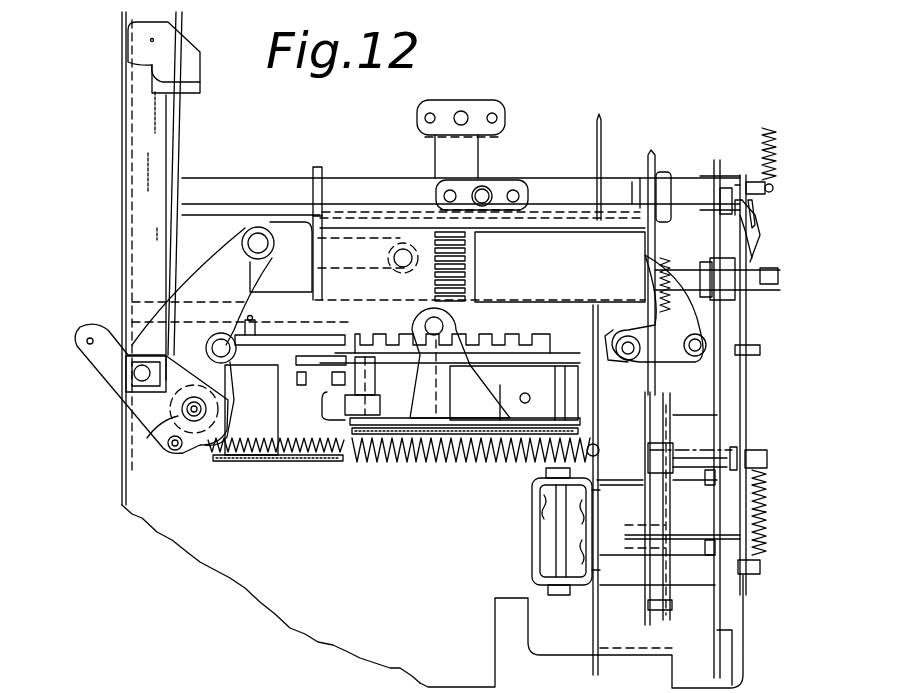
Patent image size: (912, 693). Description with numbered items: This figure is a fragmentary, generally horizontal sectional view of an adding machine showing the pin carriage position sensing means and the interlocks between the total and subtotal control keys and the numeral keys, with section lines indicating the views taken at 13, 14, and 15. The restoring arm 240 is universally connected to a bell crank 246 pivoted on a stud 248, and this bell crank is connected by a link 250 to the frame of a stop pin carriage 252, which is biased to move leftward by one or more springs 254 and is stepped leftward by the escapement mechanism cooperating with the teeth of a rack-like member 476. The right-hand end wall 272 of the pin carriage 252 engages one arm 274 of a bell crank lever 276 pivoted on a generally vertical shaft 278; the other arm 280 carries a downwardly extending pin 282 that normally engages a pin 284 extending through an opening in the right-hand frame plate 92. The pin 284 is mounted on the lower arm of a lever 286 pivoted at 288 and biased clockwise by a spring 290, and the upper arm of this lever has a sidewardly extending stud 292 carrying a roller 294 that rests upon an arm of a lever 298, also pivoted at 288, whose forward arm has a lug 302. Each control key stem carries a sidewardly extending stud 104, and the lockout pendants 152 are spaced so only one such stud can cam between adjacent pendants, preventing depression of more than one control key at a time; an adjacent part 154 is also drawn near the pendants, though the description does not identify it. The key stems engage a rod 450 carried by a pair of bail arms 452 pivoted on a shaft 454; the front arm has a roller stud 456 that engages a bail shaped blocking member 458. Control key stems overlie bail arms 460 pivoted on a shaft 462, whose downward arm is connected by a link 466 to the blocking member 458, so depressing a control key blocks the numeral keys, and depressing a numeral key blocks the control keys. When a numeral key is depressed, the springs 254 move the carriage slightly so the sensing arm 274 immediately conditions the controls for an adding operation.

The right-hand frame plate 92 is at (720, 390).
The sidewardly extending stud 104 is at (757, 535).
The lockout pendant 152 is at (672, 600).
The plate 154 is at (653, 423).
The restoring arm 240 is at (180, 134).
The bell crank 246 is at (215, 262).
The stud 248 is at (178, 428).
The link 250 is at (277, 257).
The stop pin carriage 252 is at (385, 293).
The spring 254 is at (205, 460).
The right-hand end wall 272 is at (655, 158).
The arm 274 is at (662, 244).
The bell crank lever 276 is at (645, 395).
The shaft 278 is at (654, 319).
The arm 280 is at (690, 360).
The pin 282 is at (700, 280).
The pin 284 is at (735, 318).
The lever 286 is at (740, 180).
The pivot 288 is at (120, 277).
The spring 290 is at (768, 128).
The stud 292 is at (770, 186).
The roller 294 is at (760, 218).
The lever 298 is at (755, 262).
The lug 302 is at (758, 352).
The rod 450 is at (378, 388).
The bail arm 452 is at (321, 374).
The shaft 454 is at (305, 326).
The roller stud 456 is at (380, 405).
The blocking member 458 is at (355, 489).
The bail arm 460 is at (645, 590).
The shaft 462 is at (560, 595).
The link 466 is at (540, 595).
The rack-like member 476 is at (525, 331).
The section line 13 is at (128, 466).
The section line 14 is at (316, 405).
The section line 15 is at (795, 63).